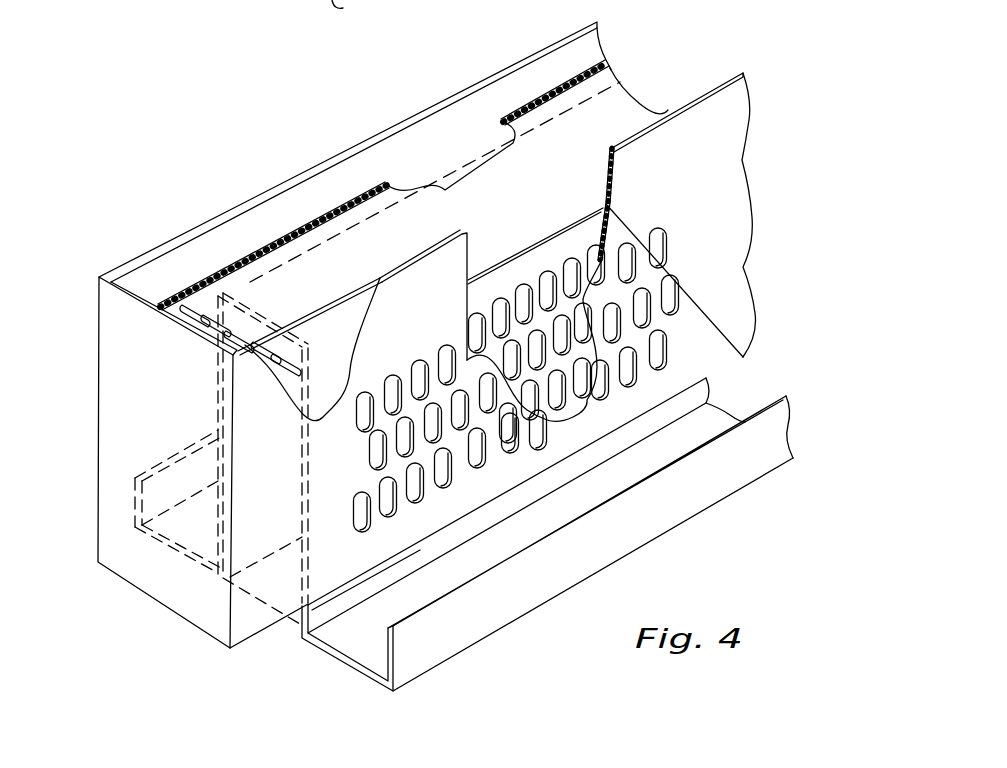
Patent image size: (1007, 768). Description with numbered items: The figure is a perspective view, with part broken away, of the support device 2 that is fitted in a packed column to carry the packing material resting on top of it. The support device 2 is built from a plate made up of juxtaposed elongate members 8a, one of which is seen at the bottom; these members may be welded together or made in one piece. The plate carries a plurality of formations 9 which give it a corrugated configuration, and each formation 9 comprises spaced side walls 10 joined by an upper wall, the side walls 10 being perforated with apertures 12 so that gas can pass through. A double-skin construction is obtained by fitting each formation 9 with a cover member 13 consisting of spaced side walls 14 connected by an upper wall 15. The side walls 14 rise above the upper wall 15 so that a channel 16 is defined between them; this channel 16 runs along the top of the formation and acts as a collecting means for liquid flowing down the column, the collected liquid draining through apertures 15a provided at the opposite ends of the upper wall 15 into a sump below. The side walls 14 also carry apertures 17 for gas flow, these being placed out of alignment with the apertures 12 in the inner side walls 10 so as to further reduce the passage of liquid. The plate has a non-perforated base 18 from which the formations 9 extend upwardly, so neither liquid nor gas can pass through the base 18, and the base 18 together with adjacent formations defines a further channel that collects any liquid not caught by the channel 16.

The support device 2 is at (96, 297).
The formation 9 is at (152, 564).
The cover member 13 is at (208, 218).
The side wall 14 is at (467, 88).
The upper wall 15 is at (648, 106).
The aperture 15a is at (236, 313).
The channel 16 is at (621, 93).
The side wall 10 is at (568, 214).
The aperture 12 is at (548, 272).
The aperture 17 is at (642, 305).
The elongate member 8a is at (353, 637).
The base 18 is at (460, 566).